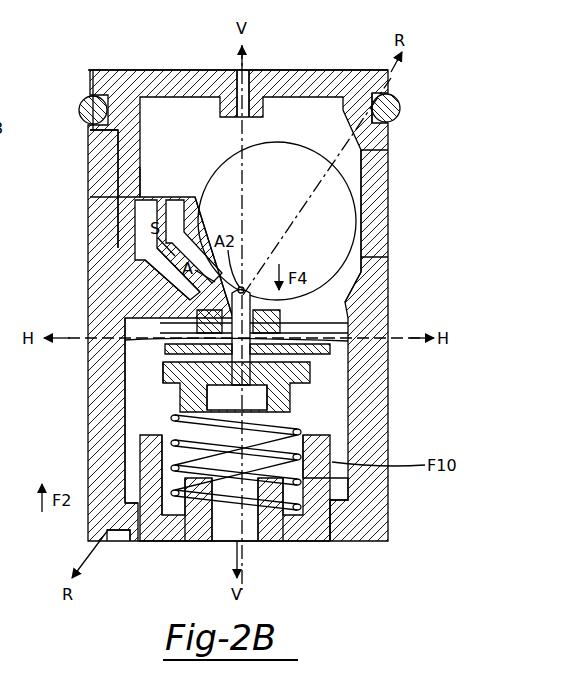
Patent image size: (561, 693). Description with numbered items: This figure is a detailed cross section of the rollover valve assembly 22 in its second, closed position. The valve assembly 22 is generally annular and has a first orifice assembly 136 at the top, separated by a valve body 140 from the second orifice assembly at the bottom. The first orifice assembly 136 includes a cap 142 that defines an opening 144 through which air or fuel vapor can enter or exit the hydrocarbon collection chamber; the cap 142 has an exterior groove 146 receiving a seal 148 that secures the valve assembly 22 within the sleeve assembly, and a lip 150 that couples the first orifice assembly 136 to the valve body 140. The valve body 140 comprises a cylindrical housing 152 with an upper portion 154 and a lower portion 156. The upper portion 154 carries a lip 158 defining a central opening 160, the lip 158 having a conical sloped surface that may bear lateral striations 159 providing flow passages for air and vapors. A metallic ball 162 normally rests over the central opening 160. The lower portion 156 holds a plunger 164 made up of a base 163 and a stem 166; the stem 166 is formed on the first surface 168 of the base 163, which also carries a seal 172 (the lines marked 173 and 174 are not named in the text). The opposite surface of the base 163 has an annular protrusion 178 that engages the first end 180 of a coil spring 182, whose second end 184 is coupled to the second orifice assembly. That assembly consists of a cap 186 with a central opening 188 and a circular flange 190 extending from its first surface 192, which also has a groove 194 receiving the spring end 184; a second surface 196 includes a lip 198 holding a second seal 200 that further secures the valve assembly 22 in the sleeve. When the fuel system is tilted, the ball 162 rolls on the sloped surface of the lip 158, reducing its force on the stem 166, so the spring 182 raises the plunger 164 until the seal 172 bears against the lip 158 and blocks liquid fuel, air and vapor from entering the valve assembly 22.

The valve assembly 22 is at (416, 42).
The first orifice assembly 136 is at (86, 76).
The valve body 140 is at (392, 266).
The cap 142 is at (290, 70).
The opening 144 is at (236, 103).
The exterior groove 146 is at (394, 98).
The seal 148 is at (398, 112).
The lip 150 is at (388, 182).
The cylindrical housing 152 is at (388, 226).
The upper portion 154 is at (140, 222).
The lower portion 156 is at (128, 405).
The lip 158 is at (125, 262).
The lateral striations 159 is at (150, 200).
The central opening 160 is at (350, 312).
The ball 162 is at (292, 192).
The base 163 is at (292, 395).
The plunger 164 is at (241, 336).
The stem 166 is at (332, 346).
The first surface 168 is at (312, 372).
The seal 172 is at (150, 316).
The seat surface 173 is at (160, 290).
The plate 174 is at (168, 346).
The annular protrusion 178 is at (312, 420).
The first end 180 is at (165, 376).
The spring 182 is at (332, 440).
The second end 184 is at (340, 512).
The cap 186 is at (292, 548).
The central opening 188 is at (218, 541).
The circular flange 190 is at (150, 462).
The first surface 192 is at (342, 490).
The groove 194 is at (168, 541).
The second surface 196 is at (290, 535).
The lip 198 is at (134, 541).
The second seal 200 is at (107, 541).